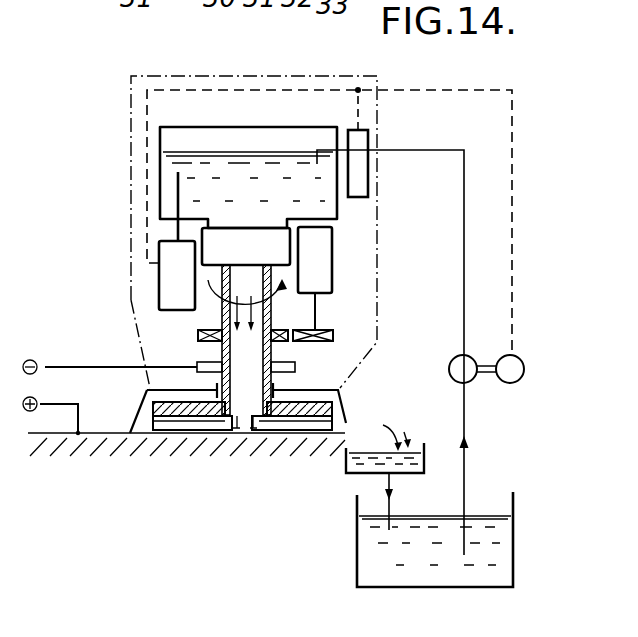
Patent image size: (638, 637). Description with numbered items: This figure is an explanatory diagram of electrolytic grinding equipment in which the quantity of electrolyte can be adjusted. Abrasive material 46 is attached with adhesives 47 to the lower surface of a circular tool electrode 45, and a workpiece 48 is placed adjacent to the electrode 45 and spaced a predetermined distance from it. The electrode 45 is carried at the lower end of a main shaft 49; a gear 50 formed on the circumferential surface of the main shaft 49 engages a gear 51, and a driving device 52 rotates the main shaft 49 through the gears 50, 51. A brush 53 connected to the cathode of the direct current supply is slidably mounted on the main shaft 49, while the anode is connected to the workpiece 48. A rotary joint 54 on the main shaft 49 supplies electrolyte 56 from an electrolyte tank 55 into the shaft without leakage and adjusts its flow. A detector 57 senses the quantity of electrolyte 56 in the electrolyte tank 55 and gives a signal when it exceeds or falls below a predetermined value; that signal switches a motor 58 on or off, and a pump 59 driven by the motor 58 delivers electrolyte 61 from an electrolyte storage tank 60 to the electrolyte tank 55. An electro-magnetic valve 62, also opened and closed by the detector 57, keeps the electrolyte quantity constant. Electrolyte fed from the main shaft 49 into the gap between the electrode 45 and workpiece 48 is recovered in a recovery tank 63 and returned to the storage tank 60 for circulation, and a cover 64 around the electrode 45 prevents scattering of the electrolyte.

The circular tool electrode 45 is at (182, 414).
The abrasive material 46 is at (277, 424).
The adhesives 47 is at (307, 430).
The workpiece 48 is at (217, 437).
The main shaft 49 is at (218, 313).
The gear 50 is at (273, 331).
The gear 51 is at (333, 336).
The driving device 52 is at (317, 245).
The brush 53 is at (295, 364).
The rotary joint 54 is at (207, 237).
The electrolyte tank 55 is at (160, 136).
The electrolyte 56 is at (233, 160).
The detector 57 is at (175, 273).
The motor 58 is at (511, 355).
The pump 59 is at (463, 355).
The electrolyte storage tank 60 is at (513, 550).
The electrolyte 61 is at (485, 532).
The electro-magnetic valve 62 is at (358, 182).
The recovery tank 63 is at (346, 475).
The cover 64 is at (338, 388).